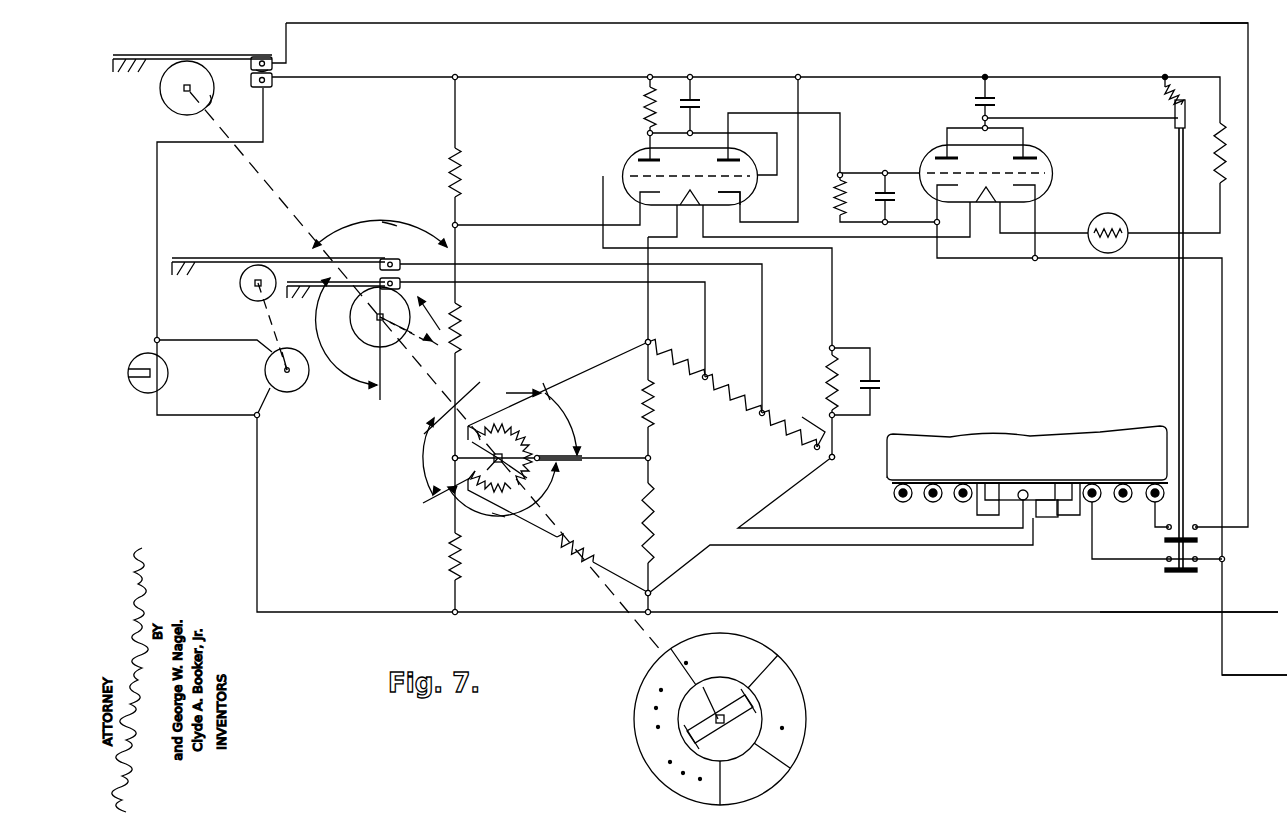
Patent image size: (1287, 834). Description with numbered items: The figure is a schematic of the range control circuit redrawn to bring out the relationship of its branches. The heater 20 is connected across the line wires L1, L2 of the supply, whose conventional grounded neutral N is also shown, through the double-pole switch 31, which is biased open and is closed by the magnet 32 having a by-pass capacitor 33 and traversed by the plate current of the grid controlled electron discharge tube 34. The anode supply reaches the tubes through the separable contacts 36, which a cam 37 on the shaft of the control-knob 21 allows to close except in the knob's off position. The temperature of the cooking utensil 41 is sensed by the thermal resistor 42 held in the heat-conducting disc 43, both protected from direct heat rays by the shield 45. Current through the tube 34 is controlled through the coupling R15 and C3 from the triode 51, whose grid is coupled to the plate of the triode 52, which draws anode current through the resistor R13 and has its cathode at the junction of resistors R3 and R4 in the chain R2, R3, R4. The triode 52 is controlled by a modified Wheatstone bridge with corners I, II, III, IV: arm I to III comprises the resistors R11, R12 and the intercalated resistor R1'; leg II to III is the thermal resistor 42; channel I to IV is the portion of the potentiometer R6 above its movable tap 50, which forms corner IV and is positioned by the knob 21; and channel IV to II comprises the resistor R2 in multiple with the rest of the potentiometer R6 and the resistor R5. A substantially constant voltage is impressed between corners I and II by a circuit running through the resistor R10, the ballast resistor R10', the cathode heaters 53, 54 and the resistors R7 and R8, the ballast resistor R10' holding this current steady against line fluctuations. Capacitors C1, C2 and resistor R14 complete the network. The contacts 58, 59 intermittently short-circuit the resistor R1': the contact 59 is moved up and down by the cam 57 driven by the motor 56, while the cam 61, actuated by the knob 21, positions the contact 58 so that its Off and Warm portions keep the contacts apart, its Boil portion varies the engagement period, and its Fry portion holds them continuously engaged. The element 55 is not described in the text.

The heater 20 is at (896, 500).
The control-knob 21 is at (635, 630).
The double-pole switch 31 is at (1203, 513).
The magnet 32 is at (1170, 108).
The by-pass capacitor 33 is at (997, 105).
The grid controlled electron discharge tube 34 is at (1048, 166).
The separable contacts 36 is at (262, 56).
The cam 37 is at (168, 104).
The cooking utensil 41 is at (955, 436).
The thermal resistor 42 is at (1024, 482).
The disc 43 is at (1046, 482).
The shield 45 is at (1046, 518).
The movable tap 50 is at (504, 444).
The triode 51 is at (750, 194).
The triode 52 is at (628, 160).
The heater 53 is at (990, 205).
The heater 54 is at (696, 208).
The motor 55 is at (168, 380).
The motor 56 is at (265, 372).
The cam 57 is at (240, 291).
The contact 58 is at (380, 283).
The contact 59 is at (400, 262).
The cam 61 is at (372, 344).
The resistor R1' is at (733, 386).
The resistor R2 is at (446, 560).
The resistor R3 is at (465, 330).
The resistor R4 is at (468, 168).
The resistor R5 is at (568, 540).
The potentiometer R6 is at (505, 449).
The resistor R7 is at (660, 508).
The resistor R8 is at (660, 412).
The resistor R10 is at (1205, 160).
The ballast resistor R10' is at (1108, 222).
The resistor R11 is at (797, 446).
The resistor R12 is at (676, 348).
The resistor R13 is at (640, 100).
The resistor R14 is at (826, 368).
The resistor R15 is at (825, 197).
The capacitor C1 is at (878, 380).
The capacitor C2 is at (700, 104).
The capacitor C3 is at (893, 198).
The bridge corner I is at (641, 332).
The bridge corner II is at (656, 599).
The bridge corner III is at (828, 470).
The bridge corner IV is at (445, 451).
The line wire L1 is at (1200, 27).
The line wire L2 is at (1257, 678).
The grounded neutral N is at (1140, 612).